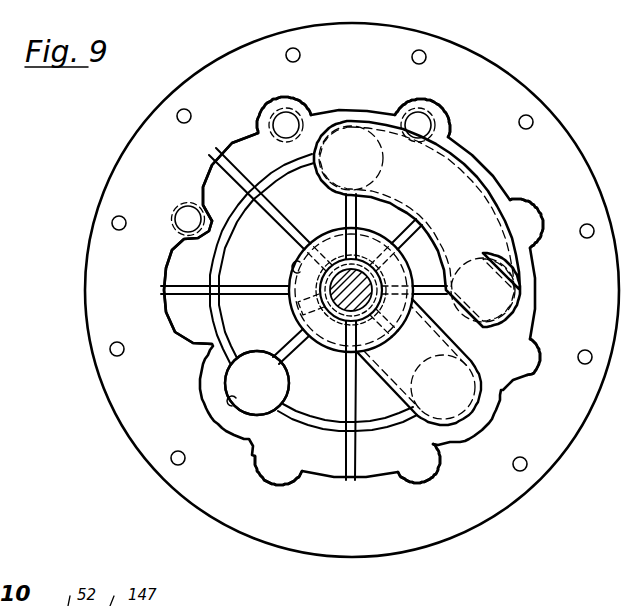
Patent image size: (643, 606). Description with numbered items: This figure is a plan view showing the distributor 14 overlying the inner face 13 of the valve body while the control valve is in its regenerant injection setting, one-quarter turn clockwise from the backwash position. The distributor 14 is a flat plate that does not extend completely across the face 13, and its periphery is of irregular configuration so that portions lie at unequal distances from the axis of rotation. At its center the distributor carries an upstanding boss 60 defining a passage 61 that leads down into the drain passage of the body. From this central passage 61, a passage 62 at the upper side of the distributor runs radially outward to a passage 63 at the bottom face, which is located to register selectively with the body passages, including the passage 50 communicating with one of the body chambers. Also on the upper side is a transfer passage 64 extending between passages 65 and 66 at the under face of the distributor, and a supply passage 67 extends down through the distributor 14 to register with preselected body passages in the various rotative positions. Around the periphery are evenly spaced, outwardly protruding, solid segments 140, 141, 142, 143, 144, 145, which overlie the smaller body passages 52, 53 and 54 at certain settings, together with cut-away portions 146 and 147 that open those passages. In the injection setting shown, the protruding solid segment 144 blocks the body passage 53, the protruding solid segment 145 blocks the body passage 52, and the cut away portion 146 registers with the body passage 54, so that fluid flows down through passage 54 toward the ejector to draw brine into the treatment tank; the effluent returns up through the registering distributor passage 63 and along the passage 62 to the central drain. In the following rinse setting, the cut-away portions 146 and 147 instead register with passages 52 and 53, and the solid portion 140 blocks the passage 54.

The inner face 13 is at (565, 160).
The distributor 14 is at (502, 372).
The passage 50 is at (252, 407).
The passage 52 is at (273, 110).
The passage 53 is at (430, 115).
The passage 54 is at (172, 213).
The boss 60 is at (337, 335).
The passage 61 is at (300, 268).
The passage 62 is at (450, 437).
The passage 63 is at (450, 407).
The transfer passage 64 is at (478, 190).
The passage 65 is at (502, 267).
The passage 66 is at (347, 132).
The supply passage 67 is at (233, 403).
The protruding solid segment 140 is at (268, 473).
The protruding solid segment 141 is at (410, 473).
The protruding solid segment 142 is at (530, 370).
The protruding solid segment 143 is at (527, 213).
The protruding solid segment 144 is at (415, 104).
The protruding solid segment 145 is at (284, 98).
The cut away portion 146 is at (212, 222).
The cut-away portion 147 is at (210, 347).